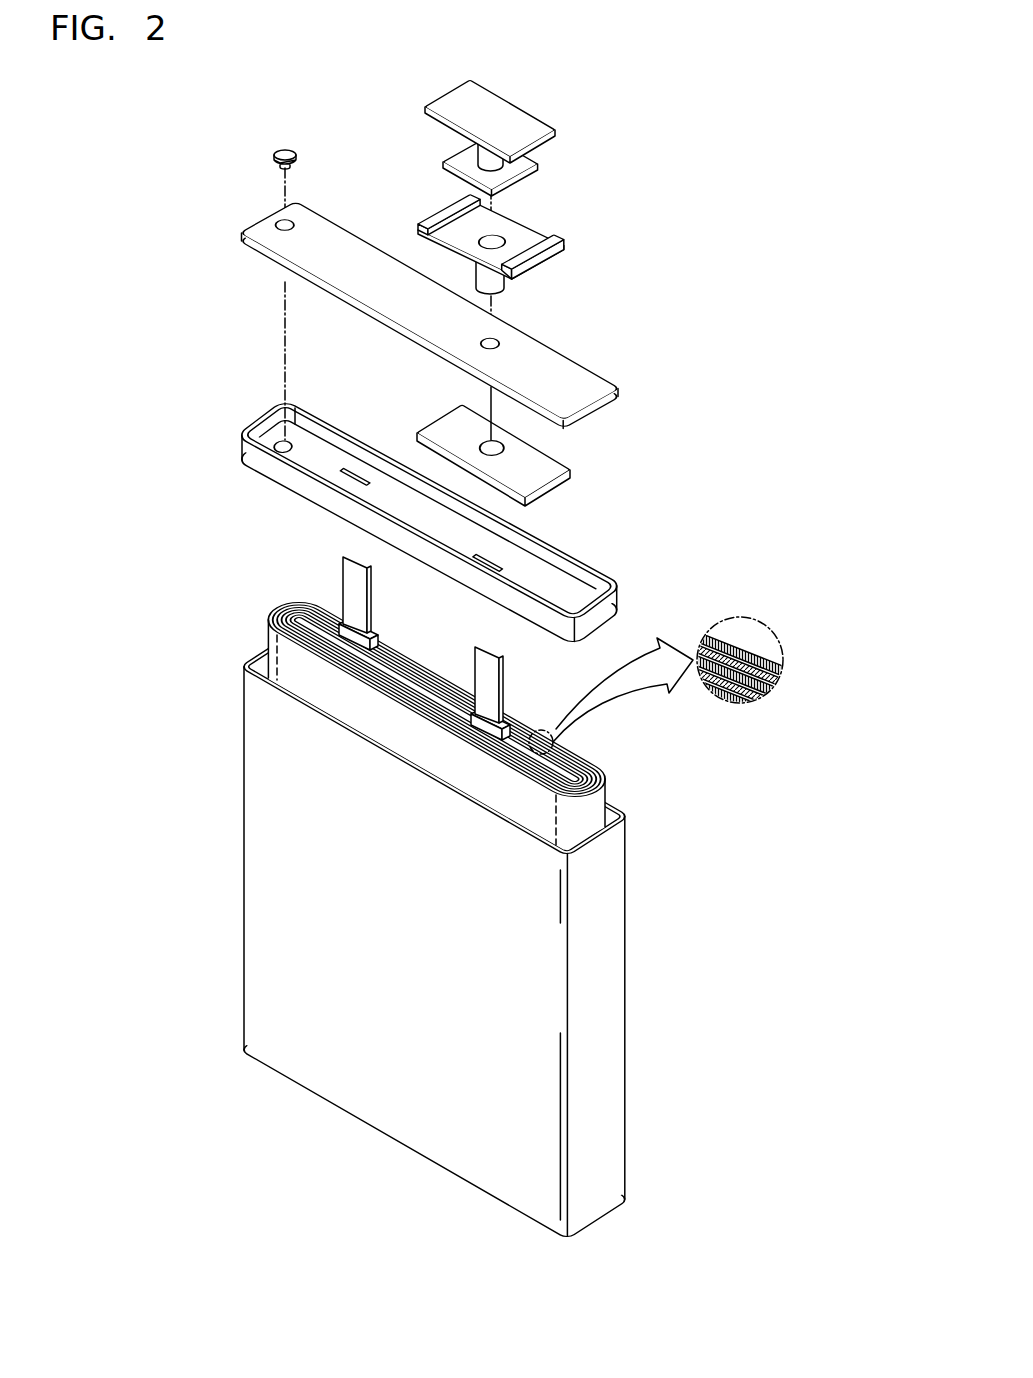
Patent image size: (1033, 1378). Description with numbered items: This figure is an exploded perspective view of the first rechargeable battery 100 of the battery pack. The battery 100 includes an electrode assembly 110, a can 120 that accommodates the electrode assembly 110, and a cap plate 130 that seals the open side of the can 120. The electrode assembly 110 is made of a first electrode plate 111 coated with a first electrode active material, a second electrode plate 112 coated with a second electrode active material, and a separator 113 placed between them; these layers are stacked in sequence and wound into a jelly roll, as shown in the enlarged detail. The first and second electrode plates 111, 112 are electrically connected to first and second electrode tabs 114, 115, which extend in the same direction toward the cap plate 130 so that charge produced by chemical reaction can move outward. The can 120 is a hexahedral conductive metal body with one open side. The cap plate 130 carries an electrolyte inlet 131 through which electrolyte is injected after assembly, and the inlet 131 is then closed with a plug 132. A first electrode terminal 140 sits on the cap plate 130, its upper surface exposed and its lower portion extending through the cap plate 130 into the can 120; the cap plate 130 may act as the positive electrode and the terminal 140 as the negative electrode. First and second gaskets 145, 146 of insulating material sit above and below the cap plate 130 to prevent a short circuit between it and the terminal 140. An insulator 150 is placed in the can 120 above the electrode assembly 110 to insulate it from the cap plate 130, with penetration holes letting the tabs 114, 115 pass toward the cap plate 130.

The first rechargeable battery 100 is at (669, 144).
The electrode assembly 110 is at (617, 757).
The first electrode plate 111 is at (775, 689).
The second electrode plate 112 is at (780, 672).
The separator 113 is at (773, 679).
The first electrode tab 114 is at (480, 667).
The second electrode tab 115 is at (352, 578).
The can 120 is at (380, 1156).
The cap plate 130 is at (424, 298).
The electrolyte inlet 131 is at (278, 224).
The plug 132 is at (282, 148).
The first electrode terminal 140 is at (533, 125).
The first gasket 145 is at (555, 253).
The second gasket 146 is at (443, 428).
The insulator 150 is at (615, 605).